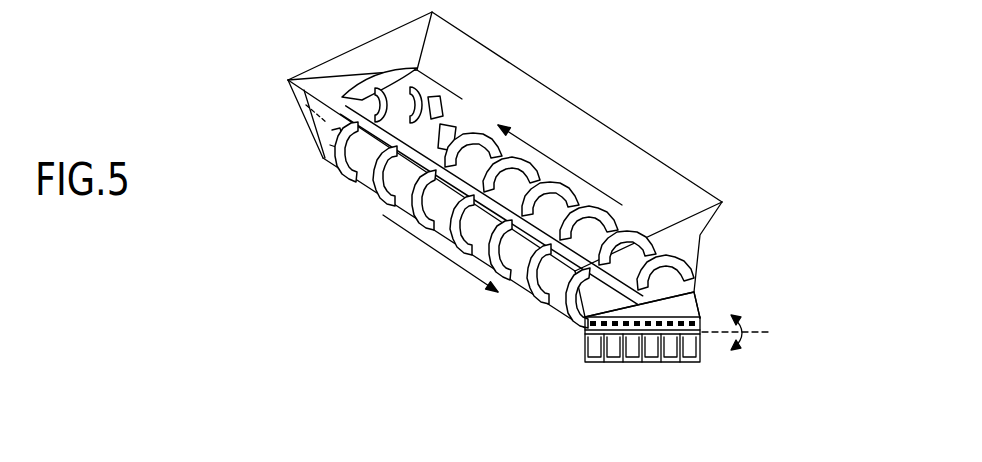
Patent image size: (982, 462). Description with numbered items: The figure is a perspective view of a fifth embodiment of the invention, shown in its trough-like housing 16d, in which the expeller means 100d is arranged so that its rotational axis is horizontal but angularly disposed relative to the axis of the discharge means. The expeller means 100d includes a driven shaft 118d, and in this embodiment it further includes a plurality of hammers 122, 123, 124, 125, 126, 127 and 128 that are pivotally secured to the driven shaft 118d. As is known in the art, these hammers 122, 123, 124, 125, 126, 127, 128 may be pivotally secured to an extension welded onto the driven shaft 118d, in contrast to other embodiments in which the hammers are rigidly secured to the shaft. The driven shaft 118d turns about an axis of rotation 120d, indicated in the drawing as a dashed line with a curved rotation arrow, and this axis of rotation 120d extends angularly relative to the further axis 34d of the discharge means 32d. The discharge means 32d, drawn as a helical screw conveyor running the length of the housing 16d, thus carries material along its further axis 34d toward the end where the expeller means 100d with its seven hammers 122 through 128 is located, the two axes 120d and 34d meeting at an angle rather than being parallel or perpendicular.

The trough / hopper 16d is at (355, 92).
The further axis 34d is at (287, 95).
The discharge means 32d is at (373, 158).
The driven shaft 118d is at (697, 317).
The expeller means 100d is at (752, 312).
The axis of rotation 120d is at (760, 336).
The hammer 128 is at (586, 355).
The hammer 127 is at (606, 361).
The hammer 126 is at (622, 361).
The hammer 125 is at (640, 361).
The hammer 124 is at (656, 361).
The hammer 123 is at (672, 361).
The hammer 122 is at (688, 361).